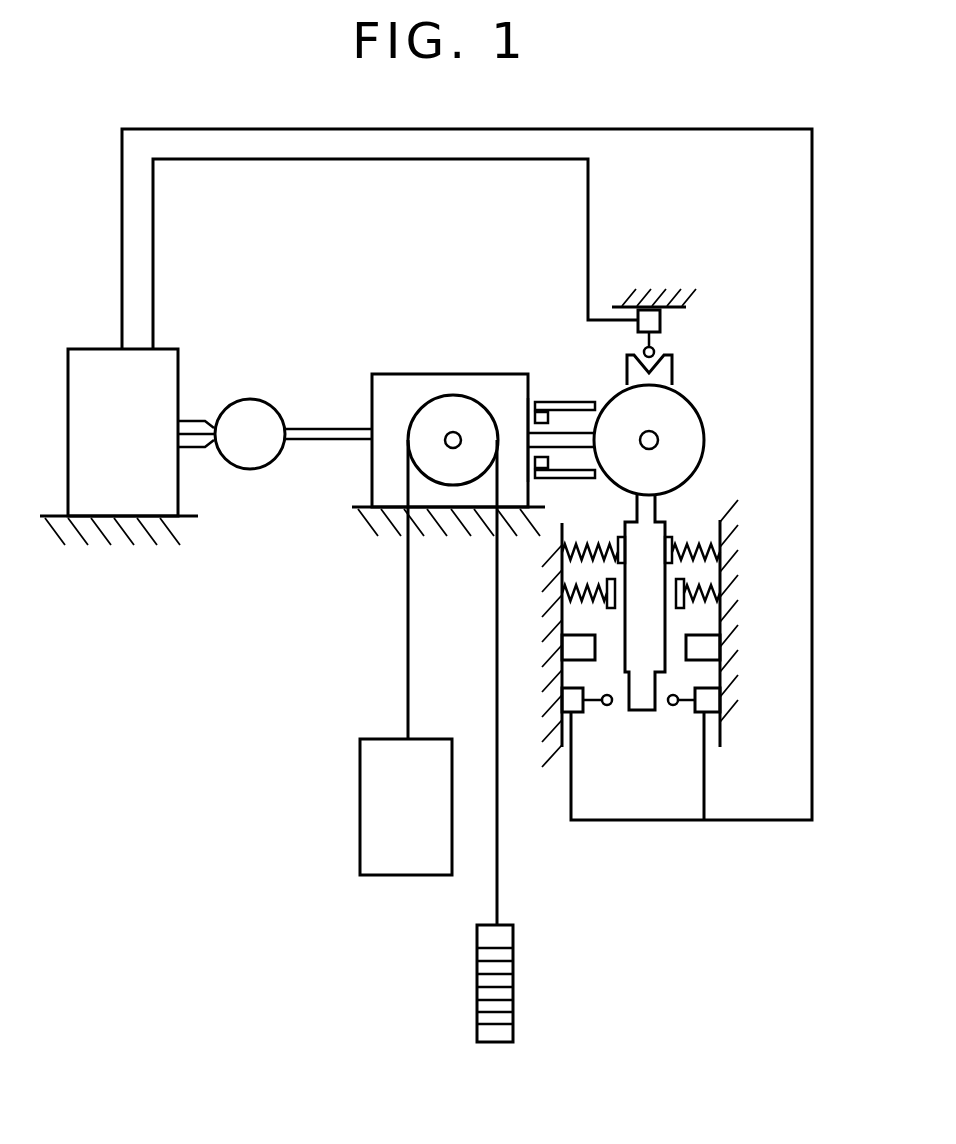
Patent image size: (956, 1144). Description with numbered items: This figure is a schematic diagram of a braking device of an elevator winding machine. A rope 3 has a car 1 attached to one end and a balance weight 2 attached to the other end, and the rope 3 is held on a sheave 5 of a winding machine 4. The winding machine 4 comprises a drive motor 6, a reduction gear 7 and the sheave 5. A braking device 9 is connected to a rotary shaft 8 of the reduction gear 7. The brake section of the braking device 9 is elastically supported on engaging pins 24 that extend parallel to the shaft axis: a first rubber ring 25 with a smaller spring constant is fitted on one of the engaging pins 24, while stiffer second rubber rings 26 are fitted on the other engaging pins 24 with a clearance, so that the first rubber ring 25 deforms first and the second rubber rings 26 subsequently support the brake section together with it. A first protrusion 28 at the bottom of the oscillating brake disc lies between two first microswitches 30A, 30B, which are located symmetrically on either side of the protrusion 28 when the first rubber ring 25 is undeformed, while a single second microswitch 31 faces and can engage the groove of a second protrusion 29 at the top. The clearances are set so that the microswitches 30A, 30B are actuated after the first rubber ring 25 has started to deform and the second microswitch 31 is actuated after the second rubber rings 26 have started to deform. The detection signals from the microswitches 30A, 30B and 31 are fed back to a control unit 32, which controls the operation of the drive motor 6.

The car 1 is at (359, 810).
The balance weight 2 is at (477, 990).
The rope 3 is at (407, 618).
The winding machine 4 is at (383, 374).
The sheave 5 is at (453, 395).
The drive motor 6 is at (248, 399).
The reduction gear 7 is at (372, 472).
The rotary shaft 8 is at (560, 438).
The braking device 9 is at (706, 440).
The engaging pins 24 is at (563, 650).
The first rubber ring 25 is at (570, 545).
The second rubber rings 26 is at (565, 580).
The first protrusion 28 is at (643, 712).
The second protrusion 29 is at (674, 370).
The first microswitch 30A is at (563, 705).
The first microswitch 30B is at (722, 702).
The second microswitch 31 is at (662, 322).
The control unit 32 is at (90, 349).